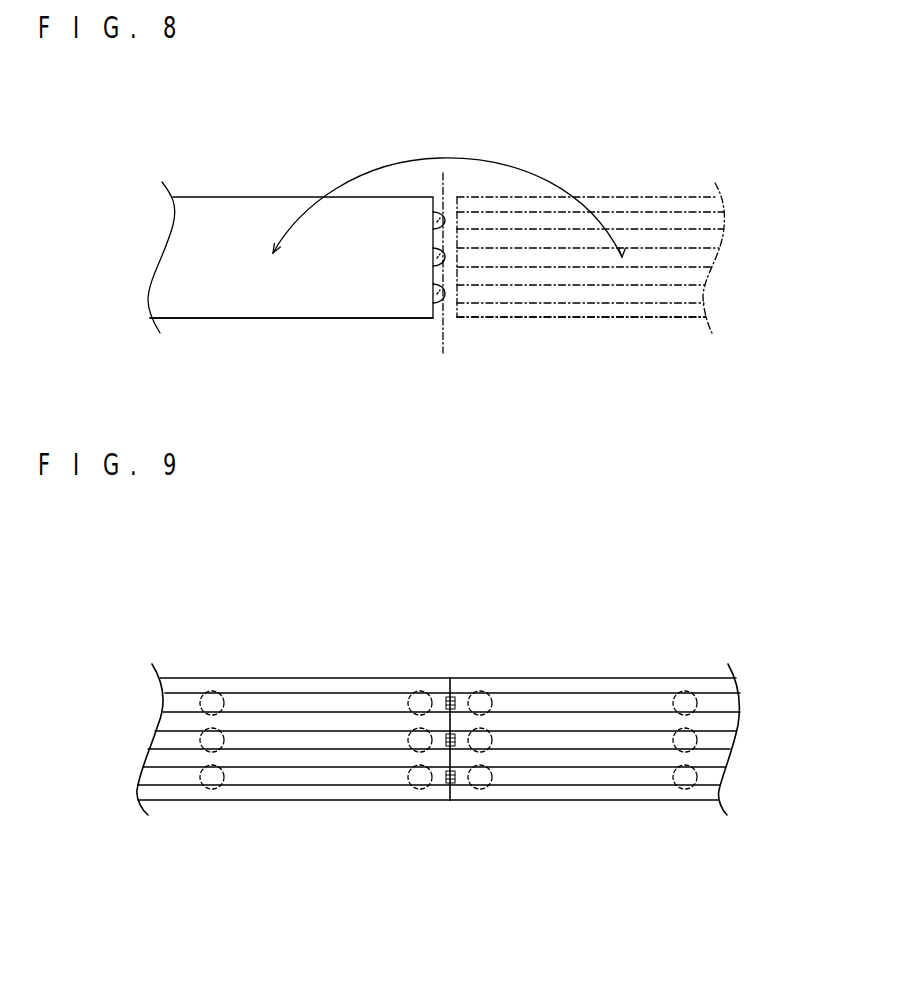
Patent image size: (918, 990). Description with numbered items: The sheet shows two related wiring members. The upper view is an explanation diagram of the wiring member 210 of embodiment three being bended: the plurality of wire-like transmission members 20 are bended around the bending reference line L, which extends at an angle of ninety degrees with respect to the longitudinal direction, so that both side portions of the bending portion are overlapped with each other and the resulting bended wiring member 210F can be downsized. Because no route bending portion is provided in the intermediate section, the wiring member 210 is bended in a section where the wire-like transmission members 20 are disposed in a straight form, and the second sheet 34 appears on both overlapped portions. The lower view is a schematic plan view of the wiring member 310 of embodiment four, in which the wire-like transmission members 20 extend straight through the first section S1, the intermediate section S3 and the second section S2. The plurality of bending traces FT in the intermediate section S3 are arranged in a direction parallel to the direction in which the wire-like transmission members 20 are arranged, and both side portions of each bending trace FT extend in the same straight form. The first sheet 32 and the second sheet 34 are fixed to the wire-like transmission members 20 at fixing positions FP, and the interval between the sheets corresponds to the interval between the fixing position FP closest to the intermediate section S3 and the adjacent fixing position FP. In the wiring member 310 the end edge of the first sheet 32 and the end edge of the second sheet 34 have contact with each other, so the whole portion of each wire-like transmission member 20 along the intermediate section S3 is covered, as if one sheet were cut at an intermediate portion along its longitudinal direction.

In FIG. 8, the wiring member 210F is at (238, 164).
In FIG. 8, the wiring member 210 is at (622, 178).
In FIG. 8, the bending reference line L is at (444, 330).
In FIG. 8, the wire-like transmission member 20 is at (437, 226).
In FIG. 9, the wire-like transmission member 20 is at (705, 775).
In FIG. 8, the second sheet 34 is at (317, 319).
In FIG. 9, the second sheet 34 is at (583, 677).
In FIG. 9, the wiring member 310 is at (438, 669).
In FIG. 9, the first sheet 32 is at (333, 677).
In FIG. 9, the bending trace FT is at (447, 702).
In FIG. 9, the fixing position FP is at (407, 700).
In FIG. 9, the first section S1 is at (312, 803).
In FIG. 9, the second section S2 is at (581, 803).
In FIG. 9, the intermediate section S3 is at (450, 803).